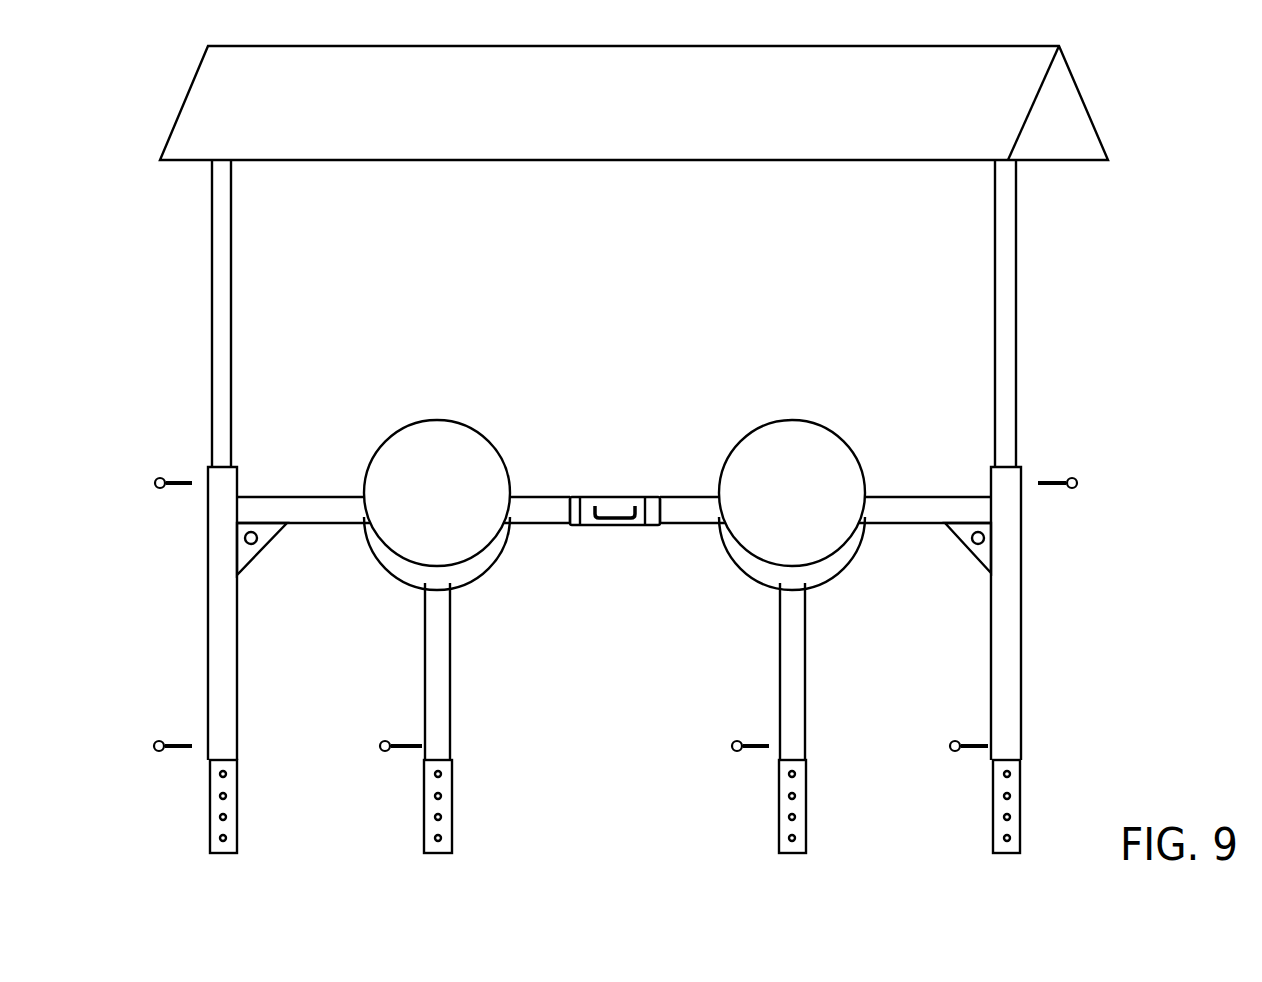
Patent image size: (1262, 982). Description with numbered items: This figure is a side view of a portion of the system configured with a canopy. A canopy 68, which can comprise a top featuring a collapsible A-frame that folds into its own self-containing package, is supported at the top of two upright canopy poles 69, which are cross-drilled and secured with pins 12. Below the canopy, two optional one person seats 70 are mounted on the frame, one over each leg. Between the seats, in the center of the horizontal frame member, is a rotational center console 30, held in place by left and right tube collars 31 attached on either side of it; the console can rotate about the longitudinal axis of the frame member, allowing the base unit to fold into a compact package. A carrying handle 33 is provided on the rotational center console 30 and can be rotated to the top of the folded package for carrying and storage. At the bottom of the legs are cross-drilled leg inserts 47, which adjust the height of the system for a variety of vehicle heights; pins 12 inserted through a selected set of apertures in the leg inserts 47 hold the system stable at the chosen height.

The pins 12 is at (157, 478).
The rotational center console 30 is at (615, 497).
The tube collars 31 is at (577, 527).
The carrying handle 33 is at (616, 527).
The leg inserts 47 is at (237, 780).
The canopy 68 is at (597, 157).
The canopy pole 69 is at (232, 280).
The one person seat 70 is at (433, 420).